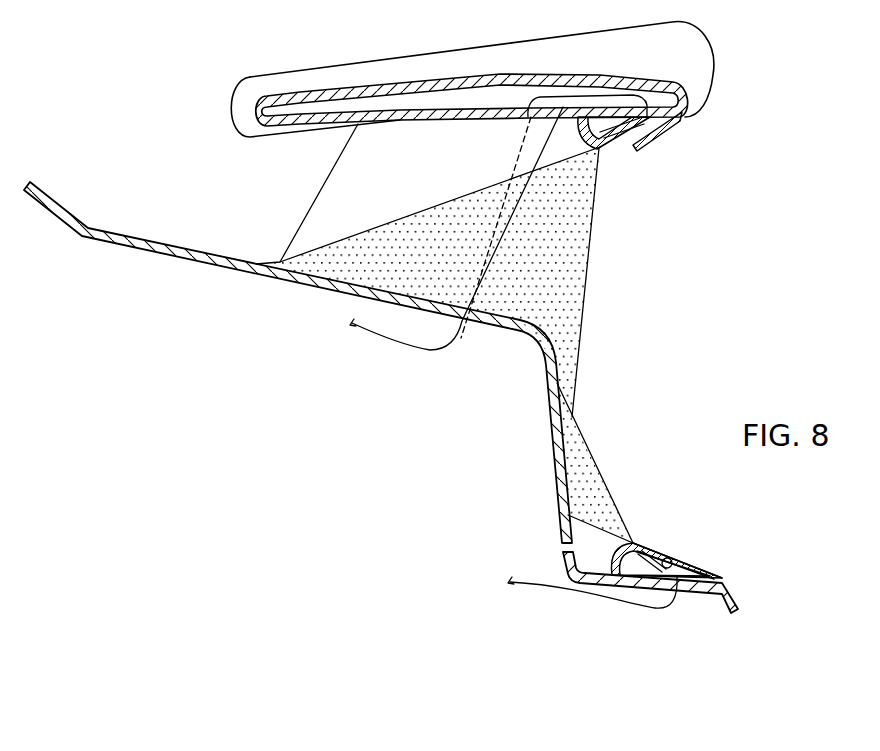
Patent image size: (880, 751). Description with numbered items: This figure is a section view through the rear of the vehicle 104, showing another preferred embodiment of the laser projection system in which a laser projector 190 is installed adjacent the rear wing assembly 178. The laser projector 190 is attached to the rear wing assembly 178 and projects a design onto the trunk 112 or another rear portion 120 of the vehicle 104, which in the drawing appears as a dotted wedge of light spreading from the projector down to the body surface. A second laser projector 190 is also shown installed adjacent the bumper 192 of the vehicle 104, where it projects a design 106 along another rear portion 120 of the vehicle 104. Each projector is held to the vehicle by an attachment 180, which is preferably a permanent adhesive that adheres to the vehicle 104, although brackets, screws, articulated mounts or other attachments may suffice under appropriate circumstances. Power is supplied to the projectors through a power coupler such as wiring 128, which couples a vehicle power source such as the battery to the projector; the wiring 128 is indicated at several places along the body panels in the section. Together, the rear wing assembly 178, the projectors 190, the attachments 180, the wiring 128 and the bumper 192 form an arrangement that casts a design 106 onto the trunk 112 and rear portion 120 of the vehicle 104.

The vehicle 104 is at (298, 347).
The trunk 112 is at (178, 244).
The rear portion 120 is at (515, 317).
The wiring 128 is at (518, 156).
The design 106 is at (413, 298).
The rear wing assembly 178 is at (673, 83).
The attachment 180 is at (672, 128).
The laser projector 190 is at (633, 149).
The bumper 192 is at (740, 598).